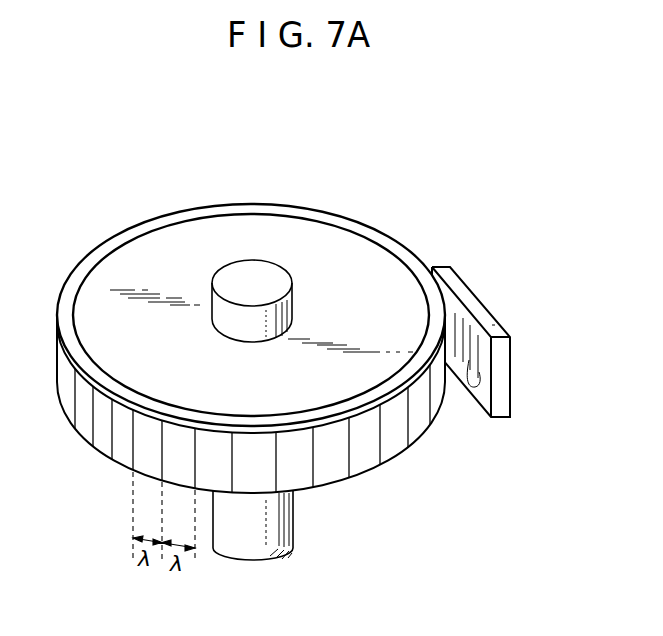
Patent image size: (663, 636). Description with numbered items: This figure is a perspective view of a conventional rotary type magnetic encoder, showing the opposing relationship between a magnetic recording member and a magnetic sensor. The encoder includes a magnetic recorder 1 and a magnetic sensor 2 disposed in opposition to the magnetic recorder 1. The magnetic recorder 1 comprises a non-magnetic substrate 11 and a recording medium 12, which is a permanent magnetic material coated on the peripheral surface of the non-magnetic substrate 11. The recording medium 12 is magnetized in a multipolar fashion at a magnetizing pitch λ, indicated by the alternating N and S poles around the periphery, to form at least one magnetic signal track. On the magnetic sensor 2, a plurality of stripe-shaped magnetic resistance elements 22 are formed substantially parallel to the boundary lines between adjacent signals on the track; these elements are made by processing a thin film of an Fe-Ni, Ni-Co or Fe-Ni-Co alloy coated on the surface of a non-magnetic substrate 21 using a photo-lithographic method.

The magnetic recorder 1 is at (388, 229).
The non-magnetic substrate 11 is at (325, 243).
The recording medium 12 is at (270, 204).
The magnetic sensor 2 is at (465, 277).
The non-magnetic substrate 21 is at (492, 325).
The magnetic resistance elements 22 is at (474, 394).